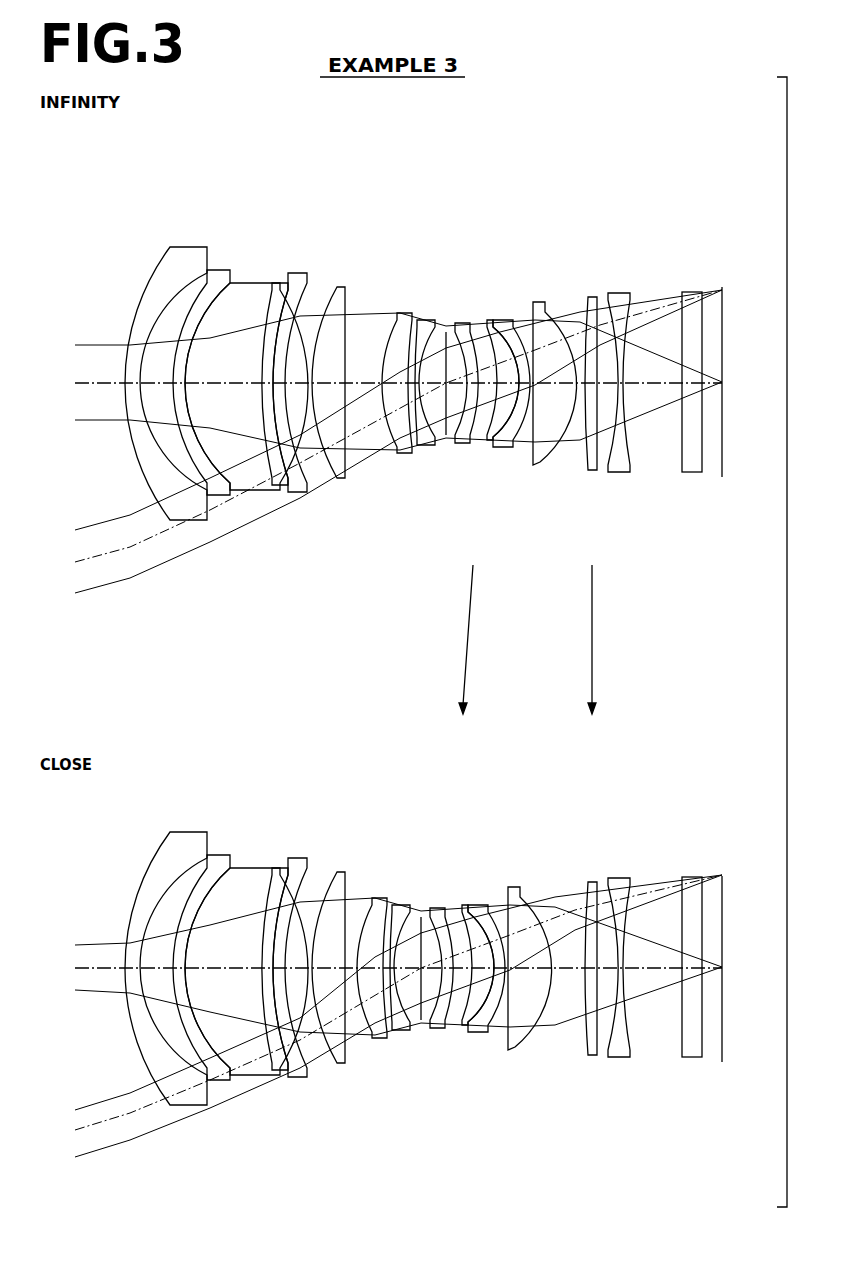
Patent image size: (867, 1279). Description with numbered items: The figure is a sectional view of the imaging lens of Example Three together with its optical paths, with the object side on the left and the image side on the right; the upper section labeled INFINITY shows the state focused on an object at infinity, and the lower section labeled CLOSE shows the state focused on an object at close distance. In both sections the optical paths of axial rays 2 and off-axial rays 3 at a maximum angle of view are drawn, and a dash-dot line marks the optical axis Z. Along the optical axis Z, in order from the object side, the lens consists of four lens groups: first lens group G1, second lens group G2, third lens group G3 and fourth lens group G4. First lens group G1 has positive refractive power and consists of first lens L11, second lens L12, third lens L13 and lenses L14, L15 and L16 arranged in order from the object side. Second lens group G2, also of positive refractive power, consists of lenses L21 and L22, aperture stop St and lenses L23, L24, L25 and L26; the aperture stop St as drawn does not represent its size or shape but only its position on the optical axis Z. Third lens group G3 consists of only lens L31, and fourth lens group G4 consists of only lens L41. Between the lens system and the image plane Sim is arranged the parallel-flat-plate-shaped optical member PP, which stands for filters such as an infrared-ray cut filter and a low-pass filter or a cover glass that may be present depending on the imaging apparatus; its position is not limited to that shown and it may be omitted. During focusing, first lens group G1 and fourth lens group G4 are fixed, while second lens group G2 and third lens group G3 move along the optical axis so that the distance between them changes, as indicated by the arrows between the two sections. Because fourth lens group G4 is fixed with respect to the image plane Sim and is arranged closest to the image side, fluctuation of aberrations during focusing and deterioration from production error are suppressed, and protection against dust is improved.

The first lens group G1 is at (345, 152).
The second lens group G2 is at (577, 482).
The third lens group G3 is at (583, 482).
The fourth lens group G4 is at (702, 185).
The first lens L11 is at (187, 247).
The second lens L12 is at (215, 270).
The third lens L13 is at (245, 283).
The lens L14 is at (280, 283).
The lens L15 is at (297, 273).
The lens L16 is at (340, 287).
The lens L21 is at (403, 312).
The lens L22 is at (425, 320).
The lens L23 is at (465, 323).
The lens L24 is at (490, 320).
The lens L25 is at (505, 320).
The lens L26 is at (538, 302).
The aperture stop St is at (446, 332).
The lens L31 is at (592, 297).
The lens L41 is at (622, 293).
The optical member PP is at (690, 472).
The image plane Sim is at (724, 440).
The optical axis Z is at (95, 383).
The axial rays 2 is at (68, 341).
The off-axial rays 3 is at (68, 526).